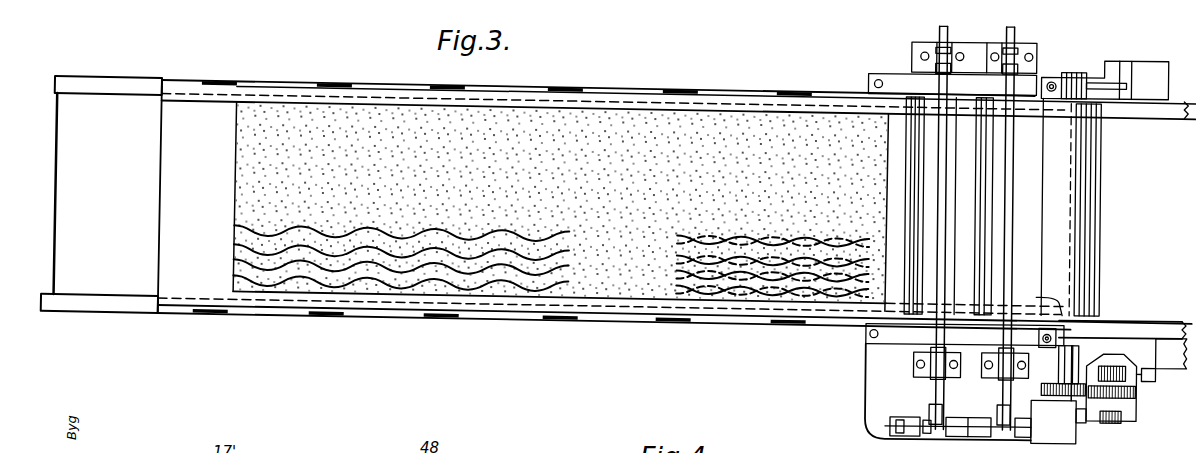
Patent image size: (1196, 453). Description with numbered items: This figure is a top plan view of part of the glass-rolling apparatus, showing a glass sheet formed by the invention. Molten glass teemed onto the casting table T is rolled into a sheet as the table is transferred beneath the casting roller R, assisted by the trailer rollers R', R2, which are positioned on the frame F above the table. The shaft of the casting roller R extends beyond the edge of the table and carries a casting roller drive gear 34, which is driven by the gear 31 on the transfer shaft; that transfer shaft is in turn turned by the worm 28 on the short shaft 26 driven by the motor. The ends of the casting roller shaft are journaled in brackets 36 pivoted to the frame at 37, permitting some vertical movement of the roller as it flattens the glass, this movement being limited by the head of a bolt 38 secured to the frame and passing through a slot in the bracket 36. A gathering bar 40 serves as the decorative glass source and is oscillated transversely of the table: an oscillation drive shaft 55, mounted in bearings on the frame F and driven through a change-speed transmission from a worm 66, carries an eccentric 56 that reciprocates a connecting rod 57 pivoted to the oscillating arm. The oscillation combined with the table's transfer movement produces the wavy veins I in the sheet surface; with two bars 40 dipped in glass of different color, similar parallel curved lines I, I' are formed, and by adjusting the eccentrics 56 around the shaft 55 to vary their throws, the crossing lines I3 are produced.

The casting table T is at (618, 112).
The decorative line I is at (400, 297).
The decorative line I' is at (400, 287).
The crossing decorative lines I3 is at (757, 284).
The casting roller R is at (1097, 210).
The trailer roller R' is at (1008, 207).
The trailer roller R2 is at (898, 209).
The gathering bar 40 is at (940, 206).
The bracket 36 is at (1065, 80).
The pivot 37 is at (1110, 98).
The bolt 38 is at (1050, 81).
The frame F is at (882, 374).
The connecting rod 57 is at (935, 395).
The oscillation drive shaft 55 is at (962, 437).
The eccentric 56 is at (922, 440).
The casting roller drive gear 34 is at (1070, 392).
The worm 28 is at (1115, 366).
The gear 31 is at (1140, 391).
The worm 66 is at (1118, 422).
The short shaft 26 is at (1171, 354).